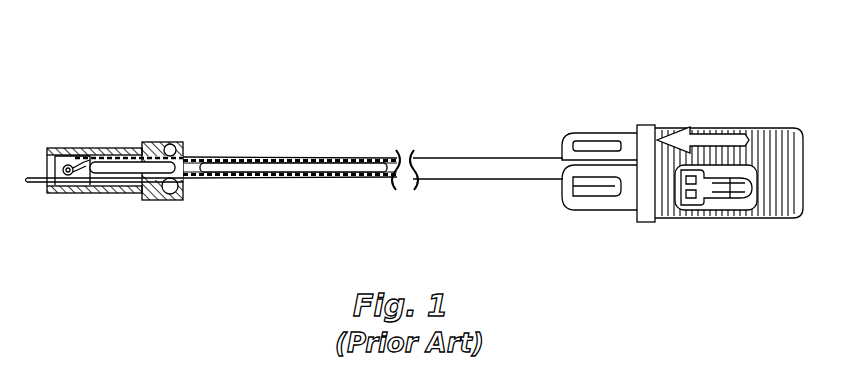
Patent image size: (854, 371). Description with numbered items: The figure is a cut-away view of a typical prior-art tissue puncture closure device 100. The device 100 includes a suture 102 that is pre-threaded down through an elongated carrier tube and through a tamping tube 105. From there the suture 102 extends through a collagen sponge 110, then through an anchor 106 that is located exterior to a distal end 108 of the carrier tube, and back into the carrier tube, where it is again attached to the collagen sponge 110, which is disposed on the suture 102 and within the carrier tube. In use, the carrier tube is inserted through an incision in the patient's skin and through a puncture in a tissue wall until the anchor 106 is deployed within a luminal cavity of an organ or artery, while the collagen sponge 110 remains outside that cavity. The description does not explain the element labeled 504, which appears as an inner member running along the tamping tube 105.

The tissue puncture closure device 100 is at (415, 151).
The suture 102 is at (187, 158).
The tamping tube 105 is at (265, 168).
The anchor 106 is at (34, 172).
The distal end 108 is at (108, 158).
The collagen sponge 110 is at (122, 167).
The inner sheath 504 is at (308, 155).